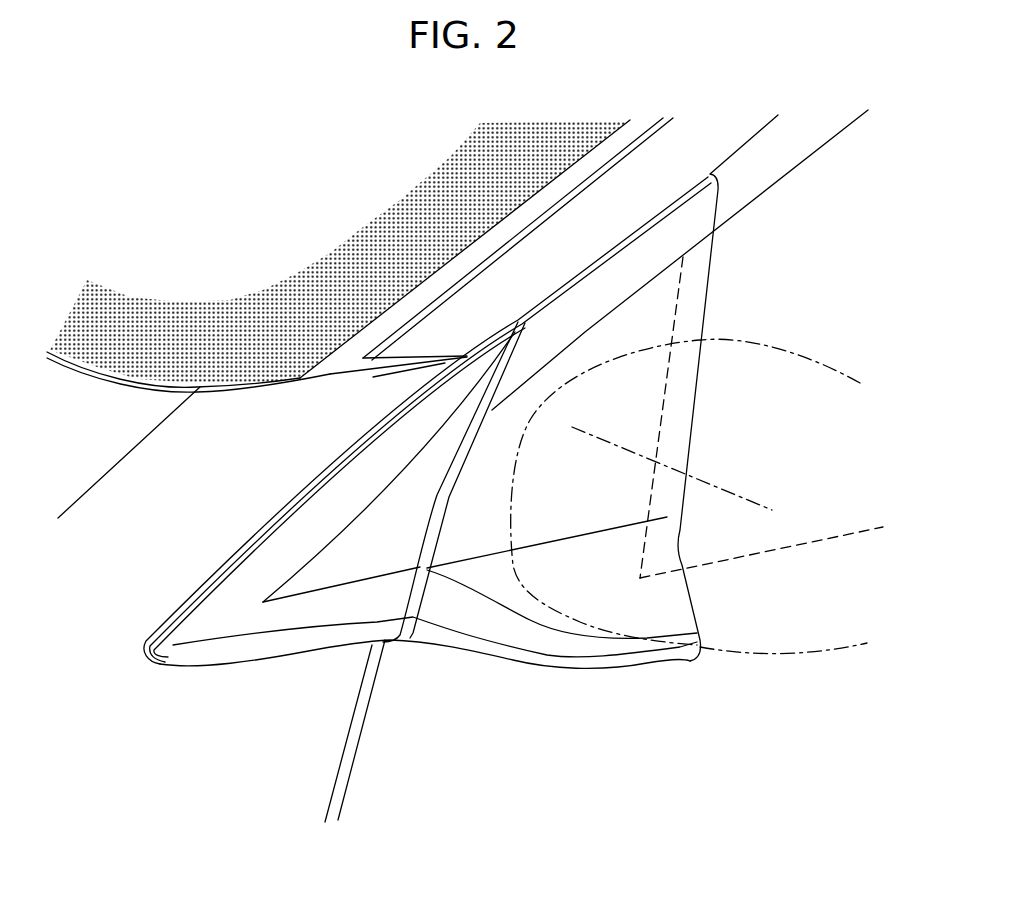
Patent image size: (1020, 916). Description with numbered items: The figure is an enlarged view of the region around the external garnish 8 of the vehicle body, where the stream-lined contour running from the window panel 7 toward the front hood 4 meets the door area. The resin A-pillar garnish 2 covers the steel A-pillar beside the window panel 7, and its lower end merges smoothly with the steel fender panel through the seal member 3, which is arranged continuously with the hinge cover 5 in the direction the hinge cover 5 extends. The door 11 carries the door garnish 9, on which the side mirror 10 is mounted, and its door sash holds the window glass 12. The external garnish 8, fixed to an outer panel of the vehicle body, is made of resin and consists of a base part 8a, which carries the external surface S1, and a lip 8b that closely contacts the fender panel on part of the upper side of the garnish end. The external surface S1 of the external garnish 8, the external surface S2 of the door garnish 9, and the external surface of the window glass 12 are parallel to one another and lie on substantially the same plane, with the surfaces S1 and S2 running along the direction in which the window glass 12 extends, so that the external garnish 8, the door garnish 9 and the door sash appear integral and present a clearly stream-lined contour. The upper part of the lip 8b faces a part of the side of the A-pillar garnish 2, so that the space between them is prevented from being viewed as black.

The A-pillar garnish 2 is at (614, 185).
The seal member 3 is at (367, 373).
The front hood 4 is at (94, 439).
The hinge cover 5 is at (123, 372).
The window panel 7 is at (224, 209).
The external garnish 8 is at (308, 655).
The base part 8a is at (238, 650).
The lip 8b is at (168, 611).
The door garnish 9 is at (650, 314).
The side mirror 10 is at (833, 620).
The door 11 is at (620, 747).
The window glass 12 is at (788, 277).
The external surface of the external garnish S1 is at (340, 567).
The external surface of the door garnish S2 is at (577, 487).